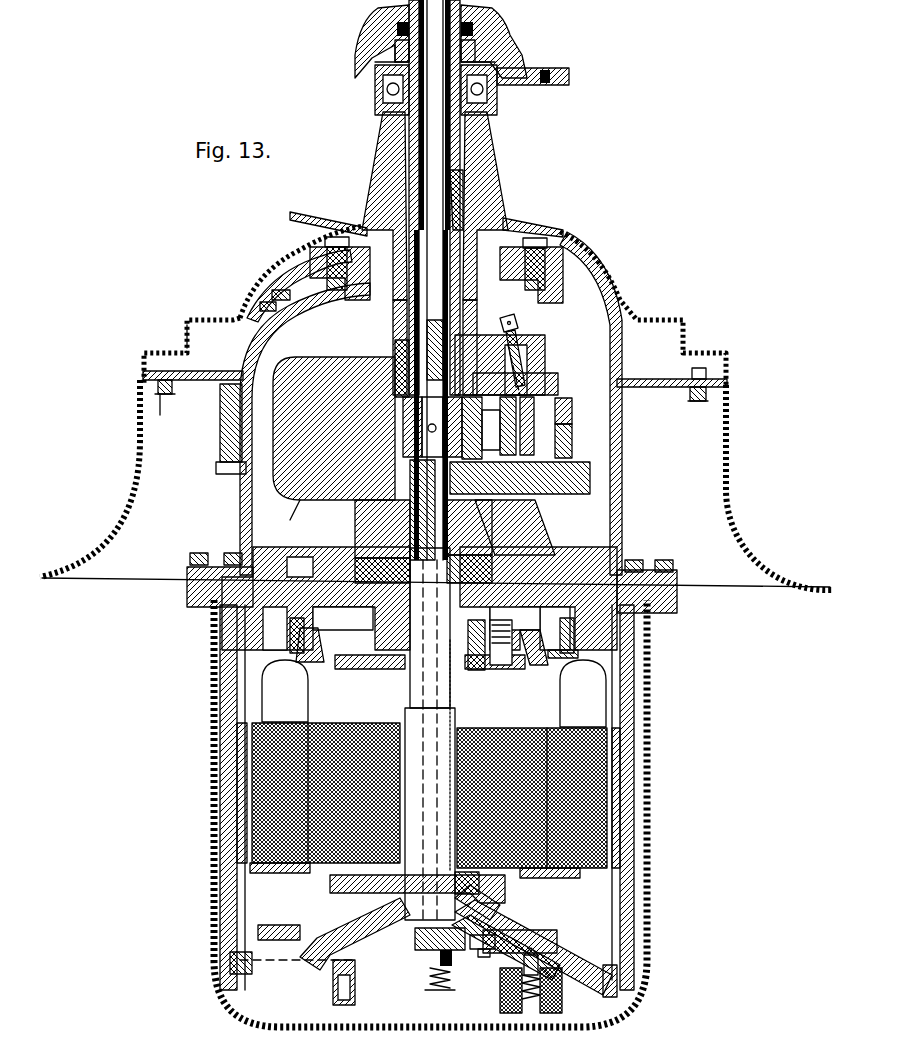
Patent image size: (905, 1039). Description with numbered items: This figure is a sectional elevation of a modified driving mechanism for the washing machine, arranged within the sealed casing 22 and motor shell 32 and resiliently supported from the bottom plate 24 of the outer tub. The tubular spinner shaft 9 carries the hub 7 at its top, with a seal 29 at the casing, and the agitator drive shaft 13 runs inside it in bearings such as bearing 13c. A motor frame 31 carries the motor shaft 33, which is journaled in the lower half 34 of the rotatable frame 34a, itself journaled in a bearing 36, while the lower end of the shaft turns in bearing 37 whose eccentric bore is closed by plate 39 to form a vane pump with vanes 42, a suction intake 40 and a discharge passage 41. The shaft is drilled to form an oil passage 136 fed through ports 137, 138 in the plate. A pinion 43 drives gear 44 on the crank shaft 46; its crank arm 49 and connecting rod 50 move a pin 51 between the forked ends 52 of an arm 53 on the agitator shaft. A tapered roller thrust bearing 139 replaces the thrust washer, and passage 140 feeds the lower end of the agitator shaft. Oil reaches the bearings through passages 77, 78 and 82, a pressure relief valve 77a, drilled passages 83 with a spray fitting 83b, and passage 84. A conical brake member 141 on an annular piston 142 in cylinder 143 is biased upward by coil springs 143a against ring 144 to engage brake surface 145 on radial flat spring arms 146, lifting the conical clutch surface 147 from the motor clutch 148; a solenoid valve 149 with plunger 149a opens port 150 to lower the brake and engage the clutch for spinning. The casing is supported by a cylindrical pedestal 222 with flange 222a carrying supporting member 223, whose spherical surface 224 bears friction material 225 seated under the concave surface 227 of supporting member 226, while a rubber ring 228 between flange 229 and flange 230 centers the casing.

The hub 7 is at (560, 80).
The tubular shaft 9 is at (463, 150).
The drive shaft 13 is at (434, 280).
The bearing 13c is at (405, 372).
The sealed casing 22 is at (242, 518).
The bottom plate 24 is at (70, 581).
The seal 29 is at (395, 35).
The frame 31 is at (222, 710).
The shell 32 is at (212, 775).
The motor shaft 33 is at (406, 700).
The lower half of rotatable frame 34 is at (365, 520).
The rotatable frame 34a is at (281, 515).
The bearing 36 is at (458, 879).
The bearing 37 is at (395, 900).
The plate 39 is at (345, 952).
The suction intake 40 is at (338, 990).
The pressure discharge passage 41 is at (478, 905).
The vanes 42 is at (420, 942).
The pinion 43 is at (330, 493).
The gear 44 is at (592, 484).
The crank shaft 46 is at (548, 386).
The crank arm 49 is at (572, 412).
The connecting rod 50 is at (572, 437).
The pin 51 is at (495, 410).
The forked ends 52 is at (494, 438).
The arm 53 is at (395, 402).
The passage 77 is at (507, 920).
The pressure relief valve 77a is at (430, 983).
The passage 78 is at (612, 772).
The transverse passage 82 is at (458, 582).
The drilled passages 83 is at (548, 540).
The fitting 83b is at (505, 320).
The passage 84 is at (458, 345).
The oil passage 136 is at (462, 203).
The port 137 is at (480, 957).
The port 138 is at (440, 955).
The tapered roller thrust bearing 139 is at (480, 98).
The passage 140 is at (415, 528).
The conical brake member 141 is at (552, 678).
The annular piston 142 is at (548, 609).
The cylinder 143 is at (548, 584).
The coil springs 143a is at (434, 693).
The ring 144 is at (312, 665).
The annular brake surface 145 is at (530, 668).
The radial flat spring arms 146 is at (345, 622).
The conical clutch surface 147 is at (478, 670).
The clutch 148 is at (492, 645).
The solenoid valve 149 is at (510, 1010).
The plunger 149a is at (524, 982).
The valve port 150 is at (540, 940).
The cylindrical pedestal 222 is at (138, 465).
The flange 222a is at (164, 400).
The supporting member 223 is at (240, 346).
The spherical surface 224 is at (266, 308).
The friction material 225 is at (285, 298).
The supporting member 226 is at (300, 268).
The spherical surface 227 is at (290, 262).
The rubber ring 228 is at (220, 400).
The flange 229 is at (224, 472).
The flange 230 is at (435, 376).